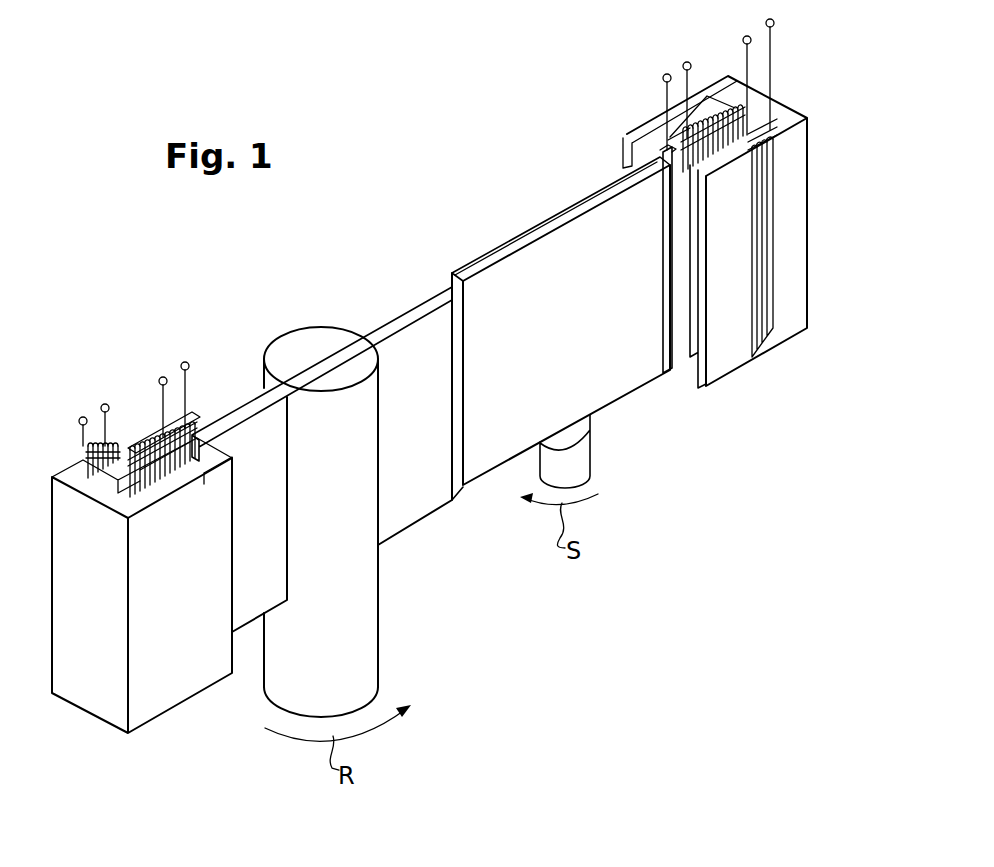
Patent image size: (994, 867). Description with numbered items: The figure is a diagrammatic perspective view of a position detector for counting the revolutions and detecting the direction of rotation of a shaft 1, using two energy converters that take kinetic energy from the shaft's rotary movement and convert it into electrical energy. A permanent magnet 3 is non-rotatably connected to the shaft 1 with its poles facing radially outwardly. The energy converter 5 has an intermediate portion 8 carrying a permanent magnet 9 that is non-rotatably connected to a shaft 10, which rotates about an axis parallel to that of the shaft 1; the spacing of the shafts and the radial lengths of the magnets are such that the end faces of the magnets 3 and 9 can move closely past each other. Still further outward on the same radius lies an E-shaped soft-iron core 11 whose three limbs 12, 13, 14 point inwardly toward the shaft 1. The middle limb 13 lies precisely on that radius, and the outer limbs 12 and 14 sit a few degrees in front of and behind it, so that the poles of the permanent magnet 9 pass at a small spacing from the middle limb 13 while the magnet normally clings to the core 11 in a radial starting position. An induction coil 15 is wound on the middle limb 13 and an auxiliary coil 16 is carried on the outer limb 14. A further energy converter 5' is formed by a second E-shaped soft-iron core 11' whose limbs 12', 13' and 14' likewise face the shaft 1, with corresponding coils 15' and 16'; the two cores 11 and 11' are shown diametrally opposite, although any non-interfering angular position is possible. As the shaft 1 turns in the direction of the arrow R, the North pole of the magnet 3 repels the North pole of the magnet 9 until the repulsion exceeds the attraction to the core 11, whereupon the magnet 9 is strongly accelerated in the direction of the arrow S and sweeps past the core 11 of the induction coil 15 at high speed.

The shaft 1 is at (372, 638).
The permanent magnet 3 is at (429, 497).
The energy converter 5 is at (638, 579).
The further energy converter 5' is at (223, 324).
The intermediate portion 8 is at (516, 226).
The permanent magnet 9 is at (620, 386).
The shaft 10 is at (583, 457).
The E-shaped soft-iron core 11 is at (743, 219).
The E-shaped soft-iron core 11' is at (138, 607).
The outer limb 12 is at (663, 115).
The limb 12' is at (276, 514).
The middle limb 13 is at (691, 301).
The limb 13' is at (322, 374).
The outer limb 14 is at (726, 267).
The limb 14' is at (156, 415).
The induction coil 15 is at (704, 89).
The induction coil 15' is at (175, 510).
The auxiliary coil 16 is at (798, 198).
The auxiliary coil 16' is at (80, 419).